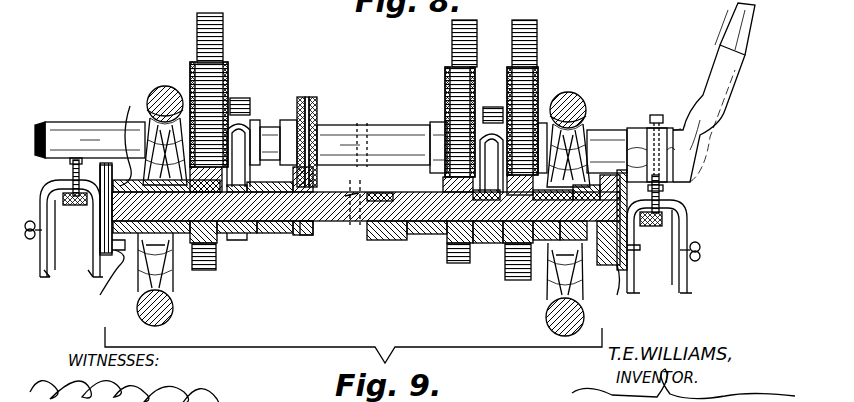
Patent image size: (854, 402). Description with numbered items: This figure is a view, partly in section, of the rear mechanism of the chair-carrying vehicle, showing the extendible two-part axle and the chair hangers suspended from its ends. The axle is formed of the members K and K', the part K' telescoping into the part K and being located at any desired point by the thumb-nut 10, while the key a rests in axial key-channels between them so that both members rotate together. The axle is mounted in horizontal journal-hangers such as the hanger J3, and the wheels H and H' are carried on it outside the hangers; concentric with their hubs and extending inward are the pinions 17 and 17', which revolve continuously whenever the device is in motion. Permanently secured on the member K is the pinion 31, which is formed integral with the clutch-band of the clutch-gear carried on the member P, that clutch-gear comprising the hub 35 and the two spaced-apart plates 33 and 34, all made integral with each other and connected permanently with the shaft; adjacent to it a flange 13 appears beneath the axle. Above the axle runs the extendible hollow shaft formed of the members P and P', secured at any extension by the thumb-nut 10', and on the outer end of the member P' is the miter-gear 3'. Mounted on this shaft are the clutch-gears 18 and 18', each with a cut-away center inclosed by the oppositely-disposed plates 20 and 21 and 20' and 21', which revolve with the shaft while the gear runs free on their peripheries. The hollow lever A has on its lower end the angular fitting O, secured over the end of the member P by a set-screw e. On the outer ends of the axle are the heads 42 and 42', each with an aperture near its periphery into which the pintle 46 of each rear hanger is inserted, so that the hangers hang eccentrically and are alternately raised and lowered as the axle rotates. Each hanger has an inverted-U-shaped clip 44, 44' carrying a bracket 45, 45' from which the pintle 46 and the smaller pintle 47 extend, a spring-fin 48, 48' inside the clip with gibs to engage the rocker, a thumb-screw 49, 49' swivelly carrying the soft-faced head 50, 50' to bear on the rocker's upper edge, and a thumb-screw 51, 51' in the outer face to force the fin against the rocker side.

The miter-gear 3' is at (29, 130).
The hollow shaft member P' is at (171, 114).
The hollow shaft member P is at (472, 129).
The wheel H is at (361, 197).
The wheel H' is at (166, 287).
The bracket 45' is at (104, 207).
The bracket 45 is at (617, 295).
The clutch-gear 18' is at (187, 35).
The plate 21' is at (193, 112).
The plate 20' is at (225, 125).
The thumb-nut 10' is at (321, 125).
The thumb-nut 10 is at (317, 228).
The key a is at (357, 186).
The shaft member K is at (366, 226).
The shaft member K' is at (275, 246).
The journal-hanger J3 is at (237, 238).
The pinion 17' is at (203, 260).
The pinion 17 is at (518, 265).
The pinion 31 is at (458, 264).
The flange 13 is at (492, 245).
The plate 34 is at (447, 80).
The plate 33 is at (478, 70).
The hub 35 is at (442, 122).
The plate 21 is at (511, 121).
The clutch-gear 18 is at (543, 37).
The plate 20 is at (537, 128).
The pintle 46 is at (603, 178).
The set screw e is at (656, 113).
The angular fitting O is at (738, 125).
The lever A is at (720, 17).
The clip 44' is at (57, 239).
The clip 44 is at (679, 248).
The thumb-screw 49' is at (47, 177).
The thumb-screw 49 is at (682, 194).
The head 50' is at (76, 216).
The head 50 is at (650, 234).
The spring-fin 48' is at (72, 235).
The spring-fin 48 is at (654, 247).
The thumb-screw 51' is at (24, 222).
The thumb-screw 51 is at (703, 248).
The head 42' is at (113, 231).
The head 42 is at (608, 231).
The pintle 47 is at (605, 275).